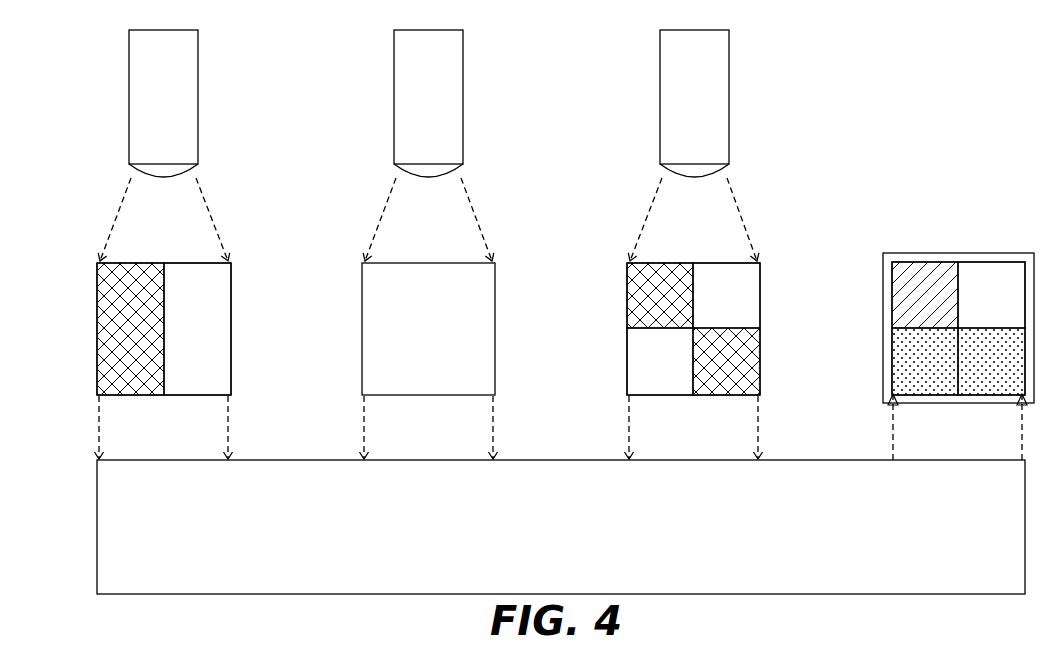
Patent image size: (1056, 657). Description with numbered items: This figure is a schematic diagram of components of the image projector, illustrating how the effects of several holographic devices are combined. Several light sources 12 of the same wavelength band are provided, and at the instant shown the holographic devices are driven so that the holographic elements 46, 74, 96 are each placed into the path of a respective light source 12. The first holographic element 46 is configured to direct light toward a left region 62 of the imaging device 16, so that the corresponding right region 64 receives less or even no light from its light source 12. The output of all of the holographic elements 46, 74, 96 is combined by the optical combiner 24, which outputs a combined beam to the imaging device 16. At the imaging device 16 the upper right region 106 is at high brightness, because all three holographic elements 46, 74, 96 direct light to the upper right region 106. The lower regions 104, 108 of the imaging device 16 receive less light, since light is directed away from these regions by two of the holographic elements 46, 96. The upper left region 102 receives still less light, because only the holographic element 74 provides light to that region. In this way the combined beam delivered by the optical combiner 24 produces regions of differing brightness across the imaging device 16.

The light source 12 is at (186, 91).
The holographic element 46 is at (93, 296).
The left region 62 is at (139, 340).
The right region 64 is at (207, 340).
The holographic element 74 is at (358, 296).
The holographic element 96 is at (623, 296).
The upper left region 102 is at (676, 308).
The lower region 104 is at (743, 373).
The upper right region 106 is at (743, 308).
The lower region 108 is at (676, 373).
The imaging device 16 is at (921, 249).
The optical combiner 24 is at (551, 563).